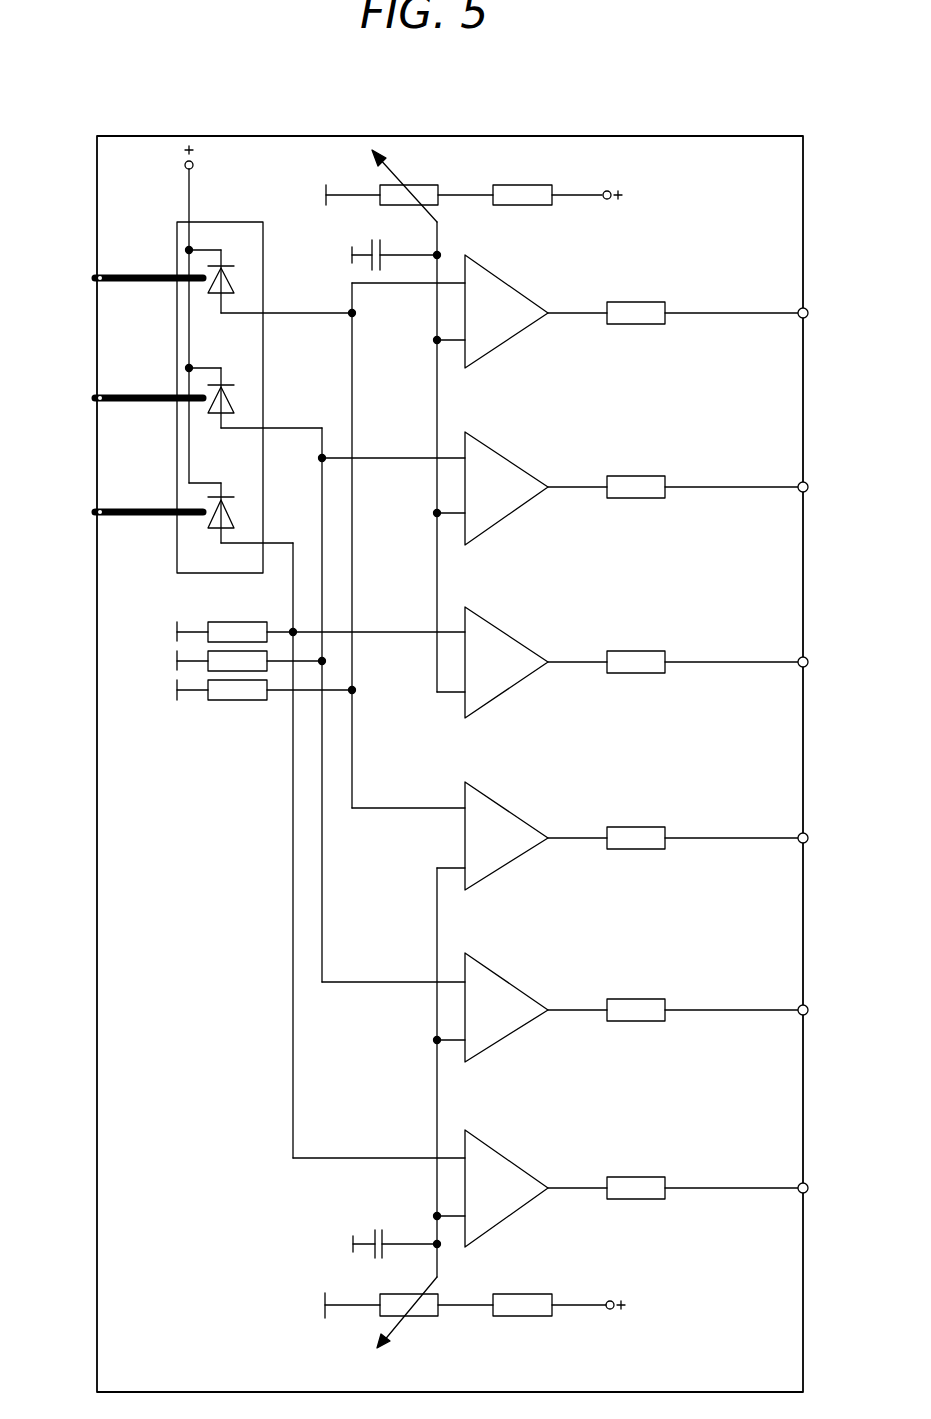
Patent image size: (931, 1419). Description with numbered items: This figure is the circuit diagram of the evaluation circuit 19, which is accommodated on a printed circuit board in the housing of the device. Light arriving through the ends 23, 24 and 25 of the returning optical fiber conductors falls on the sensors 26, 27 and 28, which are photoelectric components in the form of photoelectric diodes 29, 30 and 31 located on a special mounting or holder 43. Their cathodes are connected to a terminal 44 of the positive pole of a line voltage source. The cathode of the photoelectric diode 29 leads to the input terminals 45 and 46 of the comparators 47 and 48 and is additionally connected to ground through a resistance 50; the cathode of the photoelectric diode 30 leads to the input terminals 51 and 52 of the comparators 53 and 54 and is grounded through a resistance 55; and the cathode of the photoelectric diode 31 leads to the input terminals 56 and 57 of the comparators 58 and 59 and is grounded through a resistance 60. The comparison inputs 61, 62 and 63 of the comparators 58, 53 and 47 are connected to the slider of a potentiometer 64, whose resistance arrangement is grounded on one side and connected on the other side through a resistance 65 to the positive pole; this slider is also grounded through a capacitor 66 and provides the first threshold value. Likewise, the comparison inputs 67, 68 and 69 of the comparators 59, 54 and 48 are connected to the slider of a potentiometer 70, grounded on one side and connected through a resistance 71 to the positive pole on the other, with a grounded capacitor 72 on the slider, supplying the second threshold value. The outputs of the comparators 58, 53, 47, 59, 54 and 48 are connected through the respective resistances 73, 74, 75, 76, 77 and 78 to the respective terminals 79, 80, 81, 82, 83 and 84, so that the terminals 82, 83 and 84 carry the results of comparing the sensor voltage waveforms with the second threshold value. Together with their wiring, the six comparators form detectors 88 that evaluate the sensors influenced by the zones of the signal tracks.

The evaluation circuit 19 is at (718, 190).
The end of returning conductor 23 is at (200, 506).
The end of returning conductor 24 is at (200, 392).
The end of returning conductor 25 is at (200, 272).
The sensor 26 is at (232, 284).
The sensor 27 is at (232, 402).
The sensor 28 is at (232, 517).
The photoelectric diode 29 is at (204, 508).
The photoelectric diode 30 is at (204, 392).
The photoelectric diode 31 is at (204, 272).
The mounting or holder 43 is at (272, 186).
The terminal 44 is at (192, 160).
The input terminal 45 is at (468, 620).
The input terminal 46 is at (466, 1150).
The comparator 47 is at (520, 658).
The comparator 48 is at (520, 1182).
The resistance 50 is at (212, 622).
The input terminal 51 is at (468, 445).
The input terminal 52 is at (462, 980).
The comparator 53 is at (508, 480).
The comparator 54 is at (515, 1003).
The resistance 55 is at (212, 670).
The input terminal 56 is at (470, 262).
The input terminal 57 is at (468, 795).
The comparator 58 is at (522, 314).
The comparator 59 is at (518, 828).
The resistance 60 is at (212, 700).
The comparison input 61 is at (475, 364).
The comparison input 62 is at (480, 535).
The comparison input 63 is at (478, 714).
The potentiometer 64 is at (425, 190).
The resistance 65 is at (527, 190).
The capacitor 66 is at (383, 252).
The comparison input 67 is at (470, 882).
The comparison input 68 is at (480, 1058).
The comparison input 69 is at (485, 1240).
The potentiometer 70 is at (428, 1313).
The resistance 71 is at (524, 1316).
The capacitor 72 is at (407, 1204).
The resistance 73 is at (665, 288).
The resistance 74 is at (665, 462).
The resistance 75 is at (665, 637).
The resistance 76 is at (665, 813).
The resistance 77 is at (665, 985).
The resistance 78 is at (665, 1163).
The terminal 79 is at (808, 313).
The terminal 80 is at (808, 487).
The terminal 81 is at (808, 662).
The terminal 82 is at (808, 838).
The terminal 83 is at (808, 1010).
The terminal 84 is at (808, 1188).
The detectors 88 is at (580, 225).